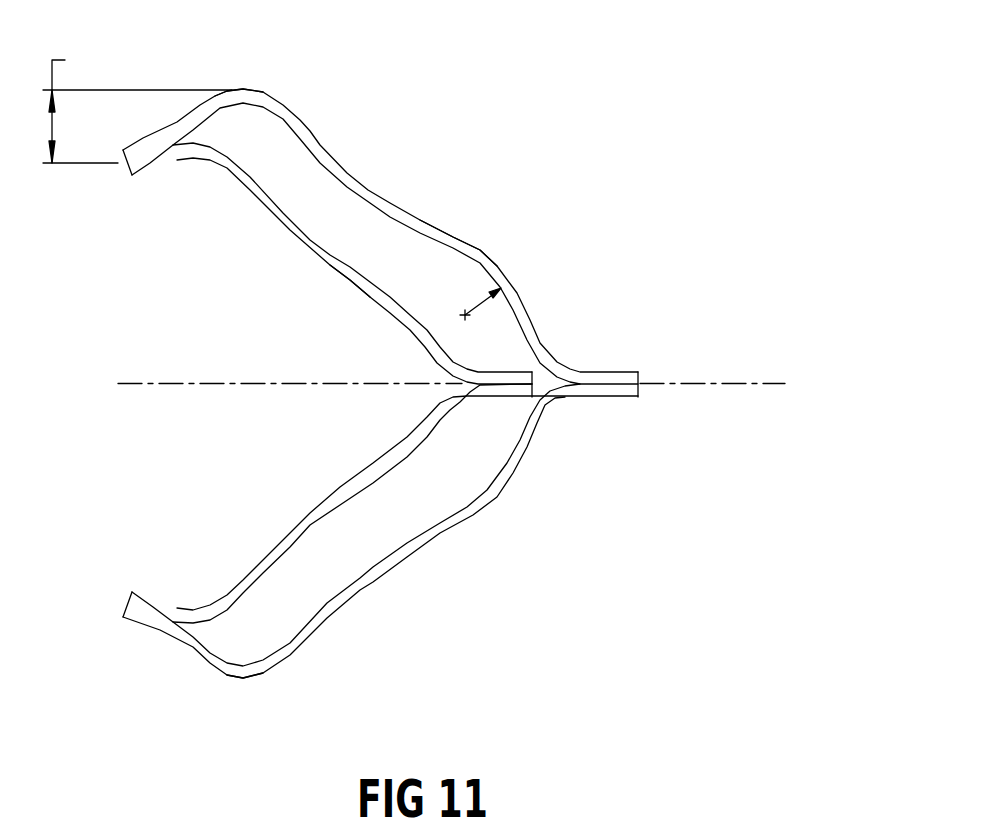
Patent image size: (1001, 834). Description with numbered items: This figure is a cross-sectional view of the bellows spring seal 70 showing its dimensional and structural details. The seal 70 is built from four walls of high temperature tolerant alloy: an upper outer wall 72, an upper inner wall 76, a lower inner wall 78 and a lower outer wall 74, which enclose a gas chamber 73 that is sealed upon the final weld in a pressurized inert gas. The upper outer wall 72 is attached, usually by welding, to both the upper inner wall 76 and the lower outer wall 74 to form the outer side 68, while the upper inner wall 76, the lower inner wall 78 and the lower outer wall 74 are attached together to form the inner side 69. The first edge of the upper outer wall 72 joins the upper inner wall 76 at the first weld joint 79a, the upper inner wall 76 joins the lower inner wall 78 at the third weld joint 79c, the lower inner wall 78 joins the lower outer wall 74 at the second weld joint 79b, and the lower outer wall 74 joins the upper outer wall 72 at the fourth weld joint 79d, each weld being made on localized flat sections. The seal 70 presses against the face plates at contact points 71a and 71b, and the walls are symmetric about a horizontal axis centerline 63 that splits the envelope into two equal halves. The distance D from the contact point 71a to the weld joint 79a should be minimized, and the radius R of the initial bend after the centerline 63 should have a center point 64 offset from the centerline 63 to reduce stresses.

The horizontal axis centerline 63 is at (203, 383).
The center point 64 is at (462, 311).
The outer side 68 is at (468, 248).
The inner side 69 is at (350, 284).
The seal 70 is at (363, 386).
The contact point 71a is at (246, 89).
The contact point 71b is at (257, 678).
The upper outer wall 72 is at (368, 190).
The gas chamber 73 is at (380, 531).
The lower outer wall 74 is at (382, 563).
The upper inner wall 76 is at (307, 244).
The lower inner wall 78 is at (308, 522).
The first weld joint 79a is at (128, 163).
The second weld joint 79b is at (123, 603).
The third weld joint 79c is at (557, 393).
The fourth weld joint 79d is at (640, 382).
The distance D is at (137, 104).
The radius R is at (482, 314).